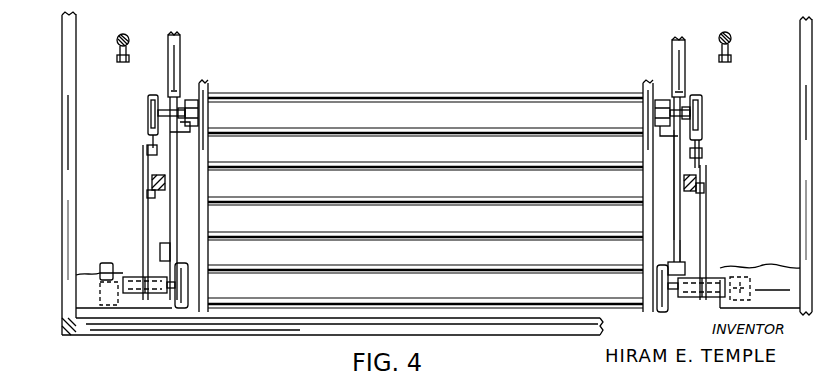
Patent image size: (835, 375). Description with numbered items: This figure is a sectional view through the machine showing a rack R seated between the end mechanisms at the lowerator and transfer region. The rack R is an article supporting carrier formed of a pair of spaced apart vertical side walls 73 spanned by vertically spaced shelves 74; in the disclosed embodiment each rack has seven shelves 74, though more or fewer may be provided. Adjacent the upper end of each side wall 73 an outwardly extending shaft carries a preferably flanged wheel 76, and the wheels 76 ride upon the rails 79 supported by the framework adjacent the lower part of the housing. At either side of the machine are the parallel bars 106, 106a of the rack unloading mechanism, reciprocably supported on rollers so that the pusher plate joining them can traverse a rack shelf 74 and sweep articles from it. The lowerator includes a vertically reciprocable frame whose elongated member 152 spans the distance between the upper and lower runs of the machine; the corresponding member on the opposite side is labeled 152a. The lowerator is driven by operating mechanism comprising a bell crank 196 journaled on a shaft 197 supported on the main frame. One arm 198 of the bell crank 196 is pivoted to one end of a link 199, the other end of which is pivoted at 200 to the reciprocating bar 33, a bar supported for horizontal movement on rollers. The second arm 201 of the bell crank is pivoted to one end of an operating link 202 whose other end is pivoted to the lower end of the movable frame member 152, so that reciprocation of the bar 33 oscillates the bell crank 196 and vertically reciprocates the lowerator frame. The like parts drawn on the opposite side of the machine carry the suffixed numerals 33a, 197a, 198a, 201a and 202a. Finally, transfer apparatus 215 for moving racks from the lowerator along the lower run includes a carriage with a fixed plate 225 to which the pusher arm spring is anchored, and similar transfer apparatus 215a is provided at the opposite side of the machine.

The shelves 74 is at (412, 128).
The vertical side walls 73 is at (207, 83).
The upright post 152a is at (168, 62).
The elongated member 152 is at (686, 68).
The parallel bar 106a is at (124, 34).
The parallel bar 106 is at (732, 39).
The transfer apparatus 215a is at (147, 115).
The transfer apparatus 215 is at (707, 128).
The flanged wheel 76 is at (190, 100).
The rails 79 is at (200, 128).
The upper rod section 202a is at (170, 220).
The lower rod section 201a is at (170, 250).
The rod 198a is at (142, 222).
The hatched block 33a is at (165, 182).
The coupling 197a is at (170, 293).
The reciprocable bar 33 is at (682, 194).
The operating link 202 is at (666, 182).
The second arm 201 is at (677, 260).
The plate 225 is at (702, 146).
The arm 198 is at (707, 232).
The pivot 200 is at (700, 186).
The link 199 is at (705, 192).
The shaft 197 is at (681, 295).
The bell crank 196 is at (718, 276).
The rack R is at (514, 90).